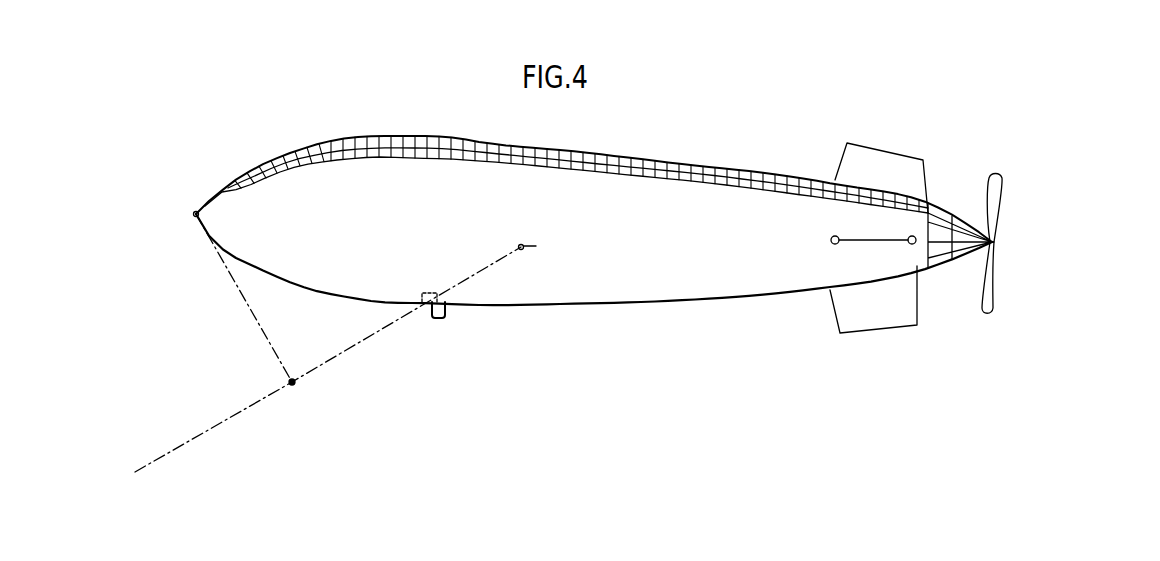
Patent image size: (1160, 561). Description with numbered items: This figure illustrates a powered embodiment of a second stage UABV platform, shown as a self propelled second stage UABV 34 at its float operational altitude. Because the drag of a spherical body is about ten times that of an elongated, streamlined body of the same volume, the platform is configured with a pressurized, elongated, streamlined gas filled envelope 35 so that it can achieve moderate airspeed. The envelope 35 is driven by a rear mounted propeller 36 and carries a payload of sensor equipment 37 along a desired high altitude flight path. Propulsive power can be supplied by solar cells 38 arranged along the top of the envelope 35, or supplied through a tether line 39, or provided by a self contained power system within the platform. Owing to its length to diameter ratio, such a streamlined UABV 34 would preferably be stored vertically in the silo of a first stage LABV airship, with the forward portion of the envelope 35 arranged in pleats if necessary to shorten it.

The self propelled second stage UABV 34 is at (625, 309).
The envelope 35 is at (692, 275).
The propeller 36 is at (988, 179).
The sensor equipment 37 is at (437, 318).
The solar cells 38 is at (572, 129).
The tether line 39 is at (340, 356).